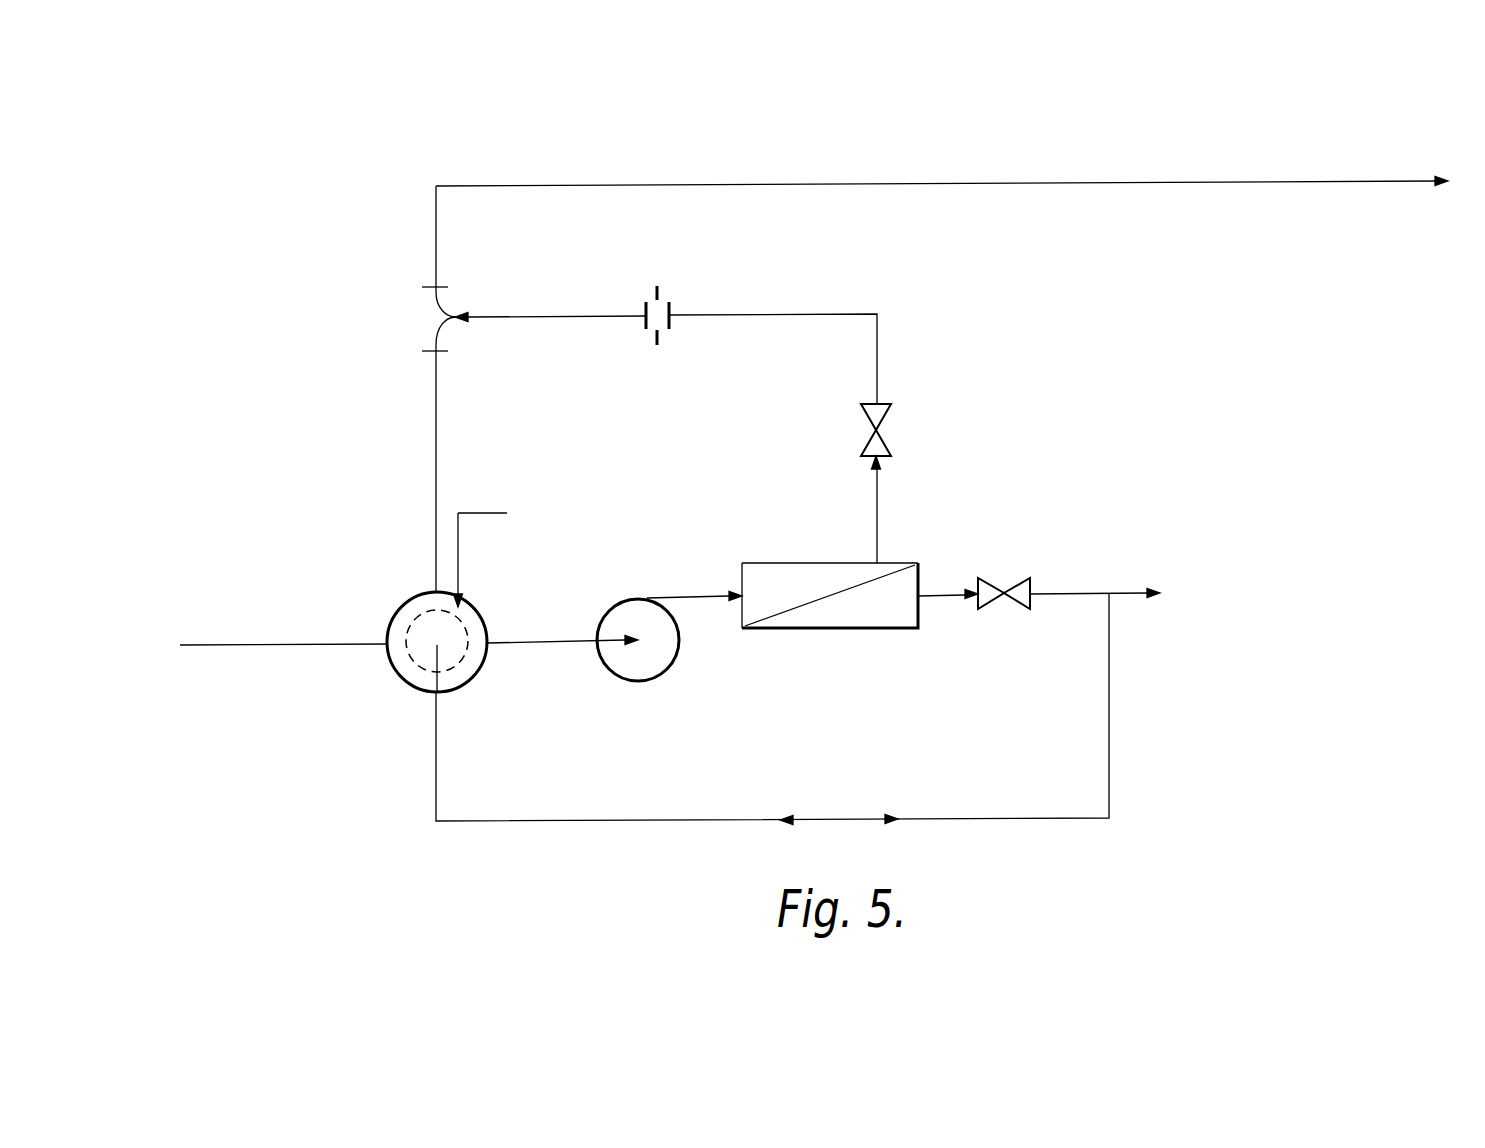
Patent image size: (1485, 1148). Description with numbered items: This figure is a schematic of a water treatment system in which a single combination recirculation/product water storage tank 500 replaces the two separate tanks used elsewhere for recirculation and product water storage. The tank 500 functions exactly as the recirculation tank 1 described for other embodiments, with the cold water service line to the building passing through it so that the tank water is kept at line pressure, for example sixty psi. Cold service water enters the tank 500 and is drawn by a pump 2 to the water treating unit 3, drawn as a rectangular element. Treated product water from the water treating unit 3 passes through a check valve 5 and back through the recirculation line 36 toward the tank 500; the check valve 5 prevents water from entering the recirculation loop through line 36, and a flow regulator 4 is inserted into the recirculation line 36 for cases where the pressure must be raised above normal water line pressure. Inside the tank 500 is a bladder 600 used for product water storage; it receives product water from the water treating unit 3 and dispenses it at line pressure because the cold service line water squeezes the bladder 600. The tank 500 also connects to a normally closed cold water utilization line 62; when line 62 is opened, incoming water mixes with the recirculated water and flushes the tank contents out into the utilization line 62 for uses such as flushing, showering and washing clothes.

The water utilization line 62 is at (801, 183).
The recirculation line 36 is at (837, 313).
The flow regulator 4 is at (640, 289).
The check valve 5 is at (850, 412).
The recirculation tank 1 is at (389, 606).
The bladder 600 is at (474, 628).
The combination recirculation/product water storage tank 500 is at (413, 687).
The pump 2 is at (662, 690).
The water treating unit 3 is at (906, 549).